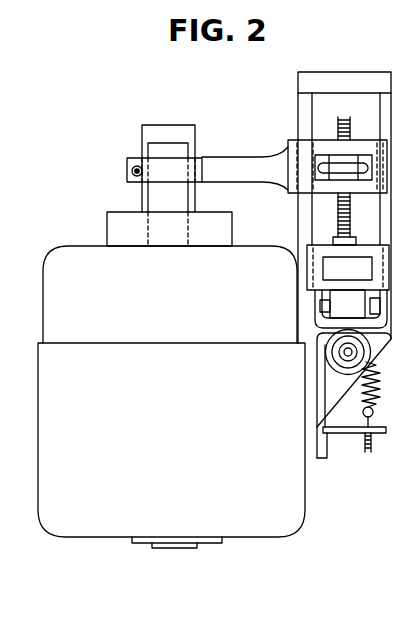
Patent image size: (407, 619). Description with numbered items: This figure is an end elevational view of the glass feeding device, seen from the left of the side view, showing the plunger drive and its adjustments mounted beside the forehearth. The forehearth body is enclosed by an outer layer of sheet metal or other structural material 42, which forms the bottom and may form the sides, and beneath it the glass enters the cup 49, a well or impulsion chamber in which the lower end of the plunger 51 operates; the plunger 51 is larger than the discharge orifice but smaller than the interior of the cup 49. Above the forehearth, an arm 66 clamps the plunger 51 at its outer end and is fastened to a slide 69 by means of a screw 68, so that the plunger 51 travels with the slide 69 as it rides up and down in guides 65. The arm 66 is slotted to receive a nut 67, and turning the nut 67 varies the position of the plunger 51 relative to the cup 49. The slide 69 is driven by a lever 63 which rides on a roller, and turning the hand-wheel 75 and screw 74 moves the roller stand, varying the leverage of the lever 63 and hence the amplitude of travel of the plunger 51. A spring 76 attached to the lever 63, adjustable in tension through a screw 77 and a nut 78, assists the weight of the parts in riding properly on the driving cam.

The structural material layer 42 is at (62, 343).
The cup 49 is at (143, 540).
The plunger 51 is at (163, 193).
The lever 63 is at (348, 300).
The guides 65 is at (300, 218).
The arm 66 is at (233, 165).
The nut 67 is at (340, 174).
The screw 68 is at (340, 208).
The slide 69 is at (365, 248).
The screw 74 is at (340, 358).
The hand-wheel 75 is at (328, 351).
The spring 76 is at (364, 395).
The screw 77 is at (368, 452).
The nut 78 is at (364, 435).